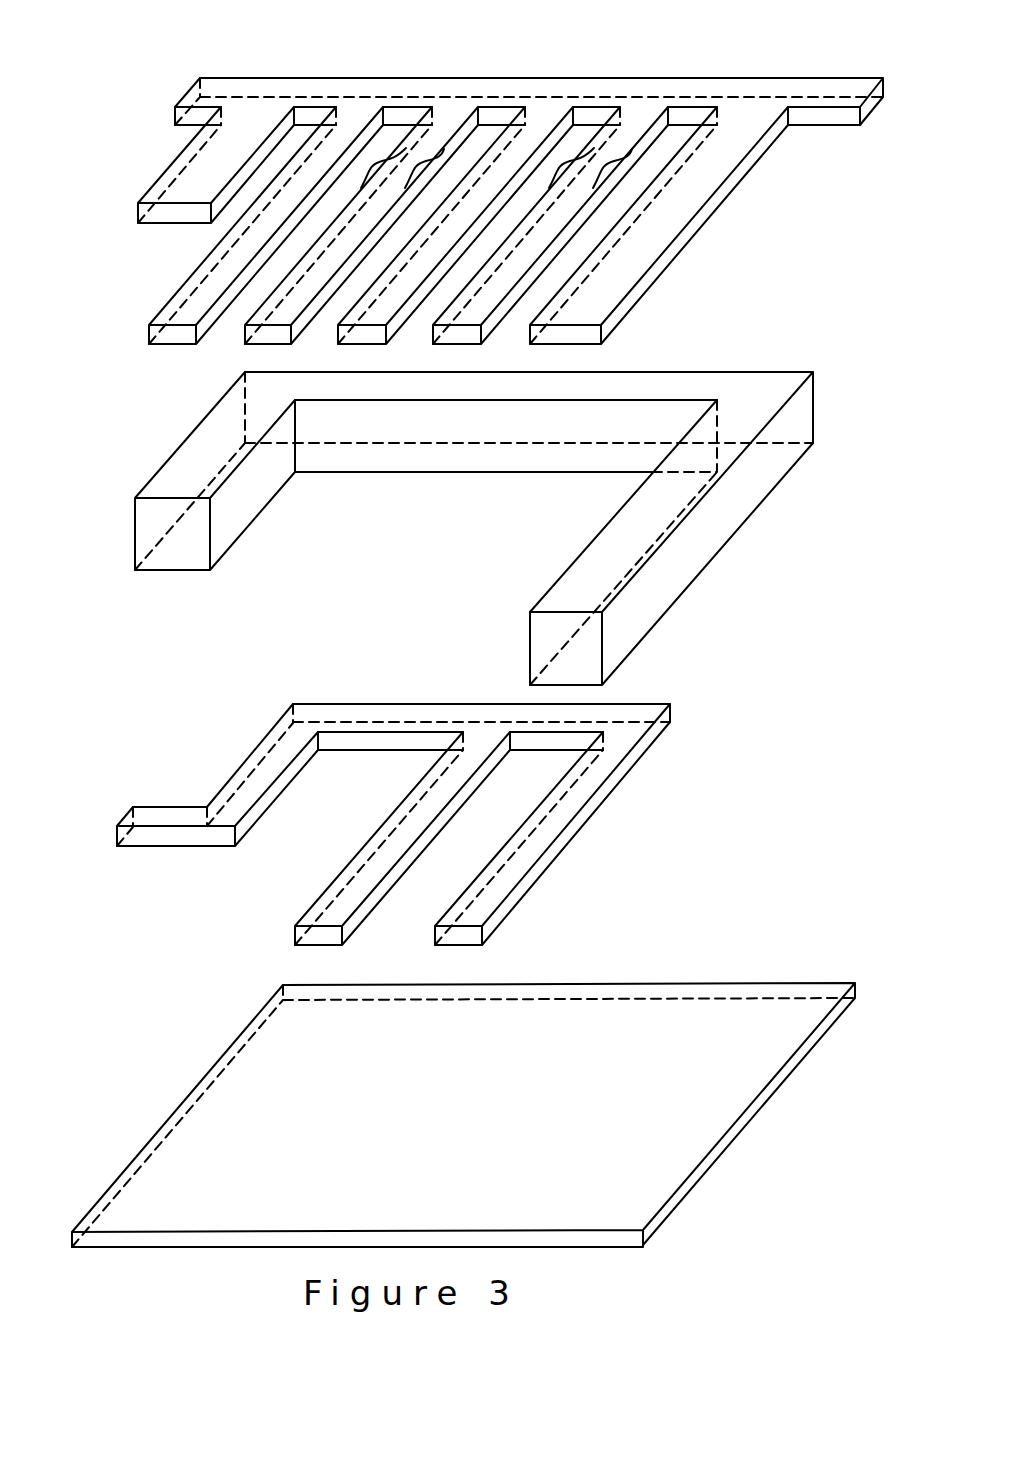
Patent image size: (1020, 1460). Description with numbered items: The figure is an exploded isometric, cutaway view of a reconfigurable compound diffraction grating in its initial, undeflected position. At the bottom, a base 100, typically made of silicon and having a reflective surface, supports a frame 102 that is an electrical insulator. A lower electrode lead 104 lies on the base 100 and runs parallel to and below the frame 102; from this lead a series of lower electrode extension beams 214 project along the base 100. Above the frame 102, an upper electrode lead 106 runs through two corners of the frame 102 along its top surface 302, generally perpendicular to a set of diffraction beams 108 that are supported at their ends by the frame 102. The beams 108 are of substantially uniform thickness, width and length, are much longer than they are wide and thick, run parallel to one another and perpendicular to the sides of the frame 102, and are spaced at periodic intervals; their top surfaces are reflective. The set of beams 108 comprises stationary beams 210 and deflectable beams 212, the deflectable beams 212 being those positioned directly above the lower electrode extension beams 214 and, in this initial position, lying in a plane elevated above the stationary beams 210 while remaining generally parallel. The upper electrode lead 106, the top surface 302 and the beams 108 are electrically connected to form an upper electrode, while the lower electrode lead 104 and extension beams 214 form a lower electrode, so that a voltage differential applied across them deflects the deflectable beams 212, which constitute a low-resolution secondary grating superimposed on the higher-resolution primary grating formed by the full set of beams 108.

The base 100 is at (463, 1118).
The frame 102 is at (718, 515).
The lower electrode lead 104 is at (393, 846).
The upper electrode lead 106 is at (465, 172).
The set of diffraction beams 108 is at (468, 172).
The stationary beams 210 is at (362, 112).
The deflectable beams 212 is at (390, 50).
The lower electrode extension beams 214 is at (313, 943).
The top surface of the frame 302 is at (168, 213).